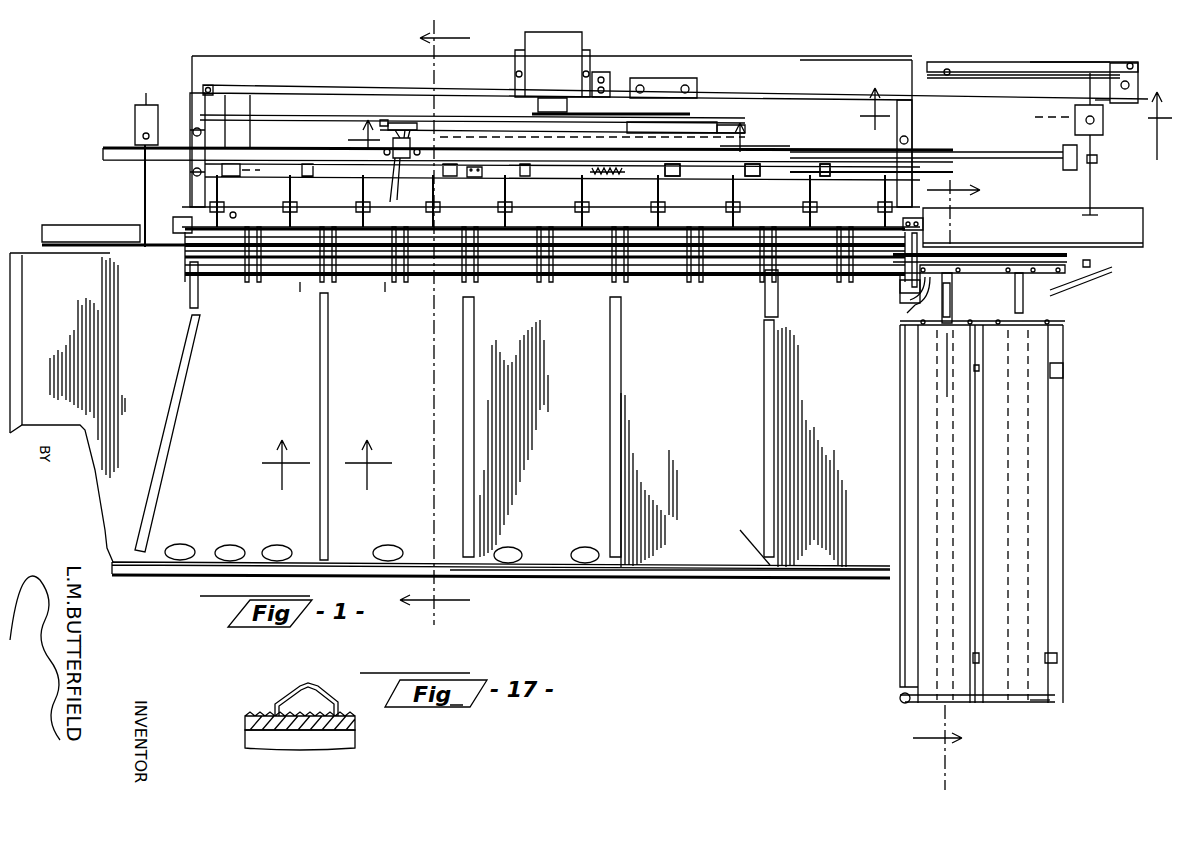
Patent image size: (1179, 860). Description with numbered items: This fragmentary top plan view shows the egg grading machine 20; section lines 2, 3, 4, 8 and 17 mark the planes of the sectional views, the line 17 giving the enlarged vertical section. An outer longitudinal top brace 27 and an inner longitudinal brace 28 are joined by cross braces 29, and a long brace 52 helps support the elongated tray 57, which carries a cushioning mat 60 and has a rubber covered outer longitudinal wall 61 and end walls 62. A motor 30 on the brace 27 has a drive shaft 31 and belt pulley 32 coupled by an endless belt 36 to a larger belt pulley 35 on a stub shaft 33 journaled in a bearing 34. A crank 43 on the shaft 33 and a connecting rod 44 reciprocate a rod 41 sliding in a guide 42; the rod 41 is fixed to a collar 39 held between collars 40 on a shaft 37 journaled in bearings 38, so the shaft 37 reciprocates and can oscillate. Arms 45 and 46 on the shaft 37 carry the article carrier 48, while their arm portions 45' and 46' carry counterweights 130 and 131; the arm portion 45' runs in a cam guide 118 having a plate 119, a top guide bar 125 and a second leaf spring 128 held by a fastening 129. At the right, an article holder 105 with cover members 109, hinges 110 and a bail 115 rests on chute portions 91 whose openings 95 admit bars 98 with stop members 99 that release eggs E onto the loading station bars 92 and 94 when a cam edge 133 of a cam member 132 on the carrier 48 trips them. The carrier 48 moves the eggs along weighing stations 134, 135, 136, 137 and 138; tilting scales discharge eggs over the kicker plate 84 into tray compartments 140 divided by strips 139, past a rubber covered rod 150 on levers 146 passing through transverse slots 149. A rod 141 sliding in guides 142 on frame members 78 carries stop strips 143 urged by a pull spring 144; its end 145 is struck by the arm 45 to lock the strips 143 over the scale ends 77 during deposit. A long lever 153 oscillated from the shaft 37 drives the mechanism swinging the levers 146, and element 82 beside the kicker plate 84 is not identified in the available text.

In FIG. 1, the article grading machine 20 is at (870, 50).
In FIG. 1, the longitudinal top brace 27 is at (347, 58).
In FIG. 1, the inner longitudinal brace 28 is at (543, 214).
In FIG. 1, the cross braces 29 is at (190, 108).
In FIG. 1, the electric motor 30 is at (546, 40).
In FIG. 1, the drive shaft 31 is at (550, 98).
In FIG. 1, the belt pulley 32 is at (535, 120).
In FIG. 1, the stub shaft 33 is at (670, 110).
In FIG. 1, the bearing 34 is at (668, 78).
In FIG. 1, the larger belt pulley 35 is at (690, 115).
In FIG. 1, the endless belt 36 is at (612, 98).
In FIG. 1, the shaft 37 is at (958, 158).
In FIG. 1, the bearings 38 is at (200, 147).
In FIG. 1, the collar 39 is at (394, 135).
In FIG. 1, the collars 40 is at (398, 170).
In FIG. 1, the rod 41 is at (400, 120).
In FIG. 1, the guide 42 is at (302, 92).
In FIG. 1, the crank 43 is at (720, 125).
In FIG. 1, the connecting rod 44 is at (500, 118).
In FIG. 1, the arm 45 is at (1108, 196).
In FIG. 1, the arm portion 45' is at (1112, 175).
In FIG. 1, the arm 46 is at (121, 196).
In FIG. 1, the arm portion 46' is at (523, 114).
In FIG. 1, the article carrier 48 is at (376, 284).
In FIG. 1, the long brace 52 is at (62, 232).
In FIG. 1, the elongated tray 57 is at (570, 576).
In FIG. 17, the elongated tray 57 is at (266, 748).
In FIG. 1, the cushioning mat 60 is at (638, 490).
In FIG. 17, the cushioning mat 60 is at (357, 731).
In FIG. 1, the outer longitudinal wall 61 is at (670, 576).
In FIG. 1, the end walls 62 is at (17, 330).
In FIG. 1, the weighing scale rod ends 77 is at (675, 178).
In FIG. 1, the longitudinal frame members 78 is at (750, 178).
In FIG. 1, the rod 82 is at (360, 212).
In FIG. 1, the kicker plate 84 is at (82, 253).
In FIG. 1, the chute portions 91 is at (985, 330).
In FIG. 1, the bar 92 is at (1048, 265).
In FIG. 1, the bar 94 is at (972, 247).
In FIG. 1, the elongated openings 95 is at (1025, 307).
In FIG. 1, the bars 98 is at (942, 300).
In FIG. 1, the stop members 99 is at (1019, 273).
In FIG. 1, the article holder 105 is at (1065, 455).
In FIG. 1, the cover members 109 is at (1030, 520).
In FIG. 1, the hinges 110 is at (1063, 368).
In FIG. 1, the bail 115 is at (1040, 703).
In FIG. 1, the cam guide 118 is at (1056, 57).
In FIG. 1, the plate 119 is at (980, 62).
In FIG. 1, the top guide bar 125 is at (1083, 70).
In FIG. 1, the second leaf spring 128 is at (1122, 68).
In FIG. 1, the fastening 129 is at (1130, 70).
In FIG. 1, the counterweight 130 is at (1075, 134).
In FIG. 1, the counterweight 131 is at (135, 127).
In FIG. 1, the cam member 132 is at (1078, 284).
In FIG. 1, the cam edge 133 is at (1090, 278).
In FIG. 1, the first weighing station 134 is at (857, 300).
In FIG. 1, the second weighing station 135 is at (659, 291).
In FIG. 1, the weighing station 136 is at (545, 284).
In FIG. 1, the weighing station 137 is at (392, 294).
In FIG. 1, the last weighing station 138 is at (271, 284).
In FIG. 1, the divider strips 139 is at (170, 452).
In FIG. 17, the divider strips 139 is at (320, 690).
In FIG. 1, the compartments 140 is at (780, 572).
In FIG. 1, the rod 141 is at (572, 162).
In FIG. 1, the guides 142 is at (472, 178).
In FIG. 1, the stop strips 143 is at (828, 177).
In FIG. 1, the pull spring 144 is at (614, 177).
In FIG. 1, the rod end 145 is at (953, 172).
In FIG. 1, the levers 146 is at (190, 300).
In FIG. 1, the transverse slots 149 is at (192, 312).
In FIG. 1, the rubber covered rod 150 is at (302, 294).
In FIG. 1, the long lever 153 is at (405, 120).
In FIG. 1, the eggs E is at (275, 545).
In FIG. 1, the section line 2 is at (444, 322).
In FIG. 1, the section line 3 is at (561, 136).
In FIG. 1, the section line 4 is at (1016, 132).
In FIG. 1, the section line 8 is at (955, 485).
In FIG. 1, the section line 17 is at (327, 478).